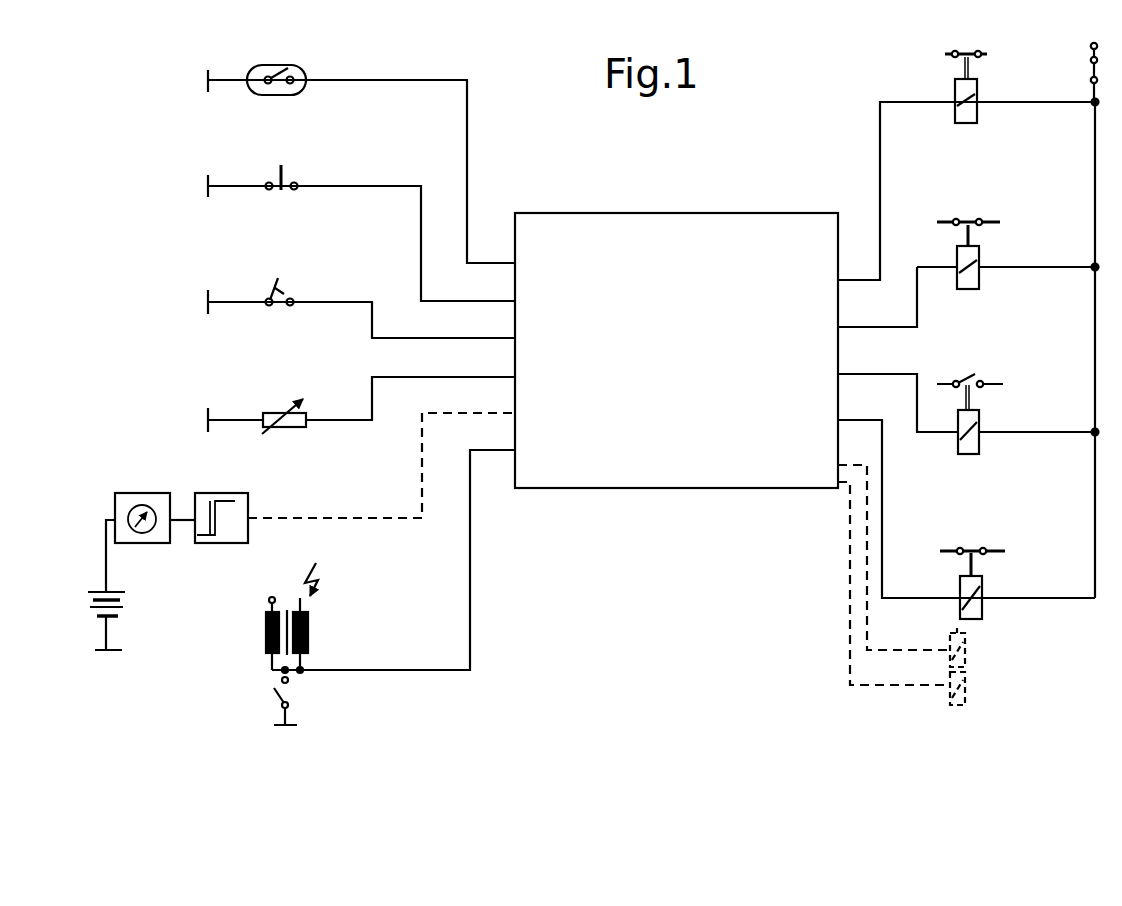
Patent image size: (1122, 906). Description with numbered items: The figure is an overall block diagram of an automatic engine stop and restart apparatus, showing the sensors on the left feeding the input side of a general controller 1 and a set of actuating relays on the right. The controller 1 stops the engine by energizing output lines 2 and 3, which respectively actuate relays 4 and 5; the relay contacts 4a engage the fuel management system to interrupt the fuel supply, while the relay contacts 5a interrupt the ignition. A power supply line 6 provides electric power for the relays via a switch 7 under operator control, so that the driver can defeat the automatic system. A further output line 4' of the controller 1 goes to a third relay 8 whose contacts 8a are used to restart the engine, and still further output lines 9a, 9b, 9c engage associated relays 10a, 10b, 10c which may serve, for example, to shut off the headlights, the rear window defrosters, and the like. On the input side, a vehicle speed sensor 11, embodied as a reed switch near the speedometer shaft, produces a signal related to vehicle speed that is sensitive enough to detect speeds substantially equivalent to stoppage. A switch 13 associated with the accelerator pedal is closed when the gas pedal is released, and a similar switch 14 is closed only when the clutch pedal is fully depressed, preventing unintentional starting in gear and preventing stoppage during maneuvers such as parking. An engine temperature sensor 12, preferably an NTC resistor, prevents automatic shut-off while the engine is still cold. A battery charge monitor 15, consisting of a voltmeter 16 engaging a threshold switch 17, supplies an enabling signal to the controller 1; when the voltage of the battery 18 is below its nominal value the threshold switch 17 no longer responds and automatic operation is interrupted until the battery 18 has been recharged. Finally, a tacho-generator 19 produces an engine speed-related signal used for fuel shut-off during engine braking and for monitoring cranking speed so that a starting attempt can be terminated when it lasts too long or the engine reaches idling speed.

The controller 1 is at (670, 242).
The output line 2 is at (882, 212).
The output line 3 is at (917, 328).
The relay 4 is at (980, 107).
The relay contacts 4a is at (985, 53).
The output line 4' is at (898, 422).
The relay 5 is at (970, 290).
The relay contacts 5a is at (970, 220).
The power supply line 6 is at (1094, 172).
The switch 7 is at (1092, 74).
The third relay 8 is at (968, 447).
The relay contacts 8a is at (970, 378).
The output line 9a is at (886, 583).
The output line 9b is at (890, 650).
The output line 9c is at (851, 662).
The relay 10a is at (975, 590).
The relay 10b is at (970, 657).
The relay 10c is at (970, 692).
The vehicle speed sensor 11 is at (282, 86).
The engine temperature sensor 12 is at (296, 424).
The switch 13 is at (284, 190).
The switch 14 is at (275, 306).
The battery charge monitor 15 is at (158, 552).
The voltmeter 16 is at (128, 496).
The threshold switch 17 is at (238, 497).
The battery 18 is at (120, 603).
The tacho-generator 19 is at (312, 665).